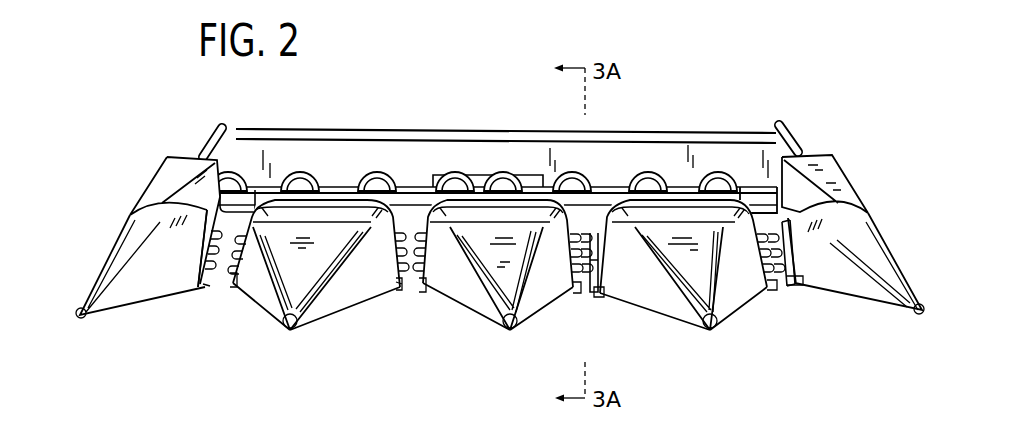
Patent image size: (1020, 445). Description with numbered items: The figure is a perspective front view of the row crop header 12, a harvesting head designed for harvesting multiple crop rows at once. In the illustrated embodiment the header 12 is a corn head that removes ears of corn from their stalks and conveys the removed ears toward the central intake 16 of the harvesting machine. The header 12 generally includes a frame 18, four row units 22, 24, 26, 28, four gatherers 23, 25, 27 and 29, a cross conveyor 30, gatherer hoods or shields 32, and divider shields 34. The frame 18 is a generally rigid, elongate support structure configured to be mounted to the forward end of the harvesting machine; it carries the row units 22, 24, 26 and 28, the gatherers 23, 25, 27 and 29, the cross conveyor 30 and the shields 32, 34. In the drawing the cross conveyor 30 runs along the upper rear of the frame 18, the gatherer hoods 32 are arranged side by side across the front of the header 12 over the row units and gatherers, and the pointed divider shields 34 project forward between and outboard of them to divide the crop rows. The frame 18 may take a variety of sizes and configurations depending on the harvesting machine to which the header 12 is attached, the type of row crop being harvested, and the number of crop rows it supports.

The header 12 is at (799, 137).
The central intake 16 is at (437, 178).
The frame 18 is at (287, 131).
The row unit 22 is at (208, 287).
The gatherer 23 is at (224, 285).
The row unit 24 is at (401, 300).
The gatherer 25 is at (413, 273).
The row unit 26 is at (590, 293).
The gatherer 27 is at (593, 293).
The row unit 28 is at (782, 287).
The gatherer 29 is at (777, 280).
The cross conveyor 30 is at (256, 190).
The gatherer hood 32 is at (325, 205).
The divider shield 34 is at (128, 298).